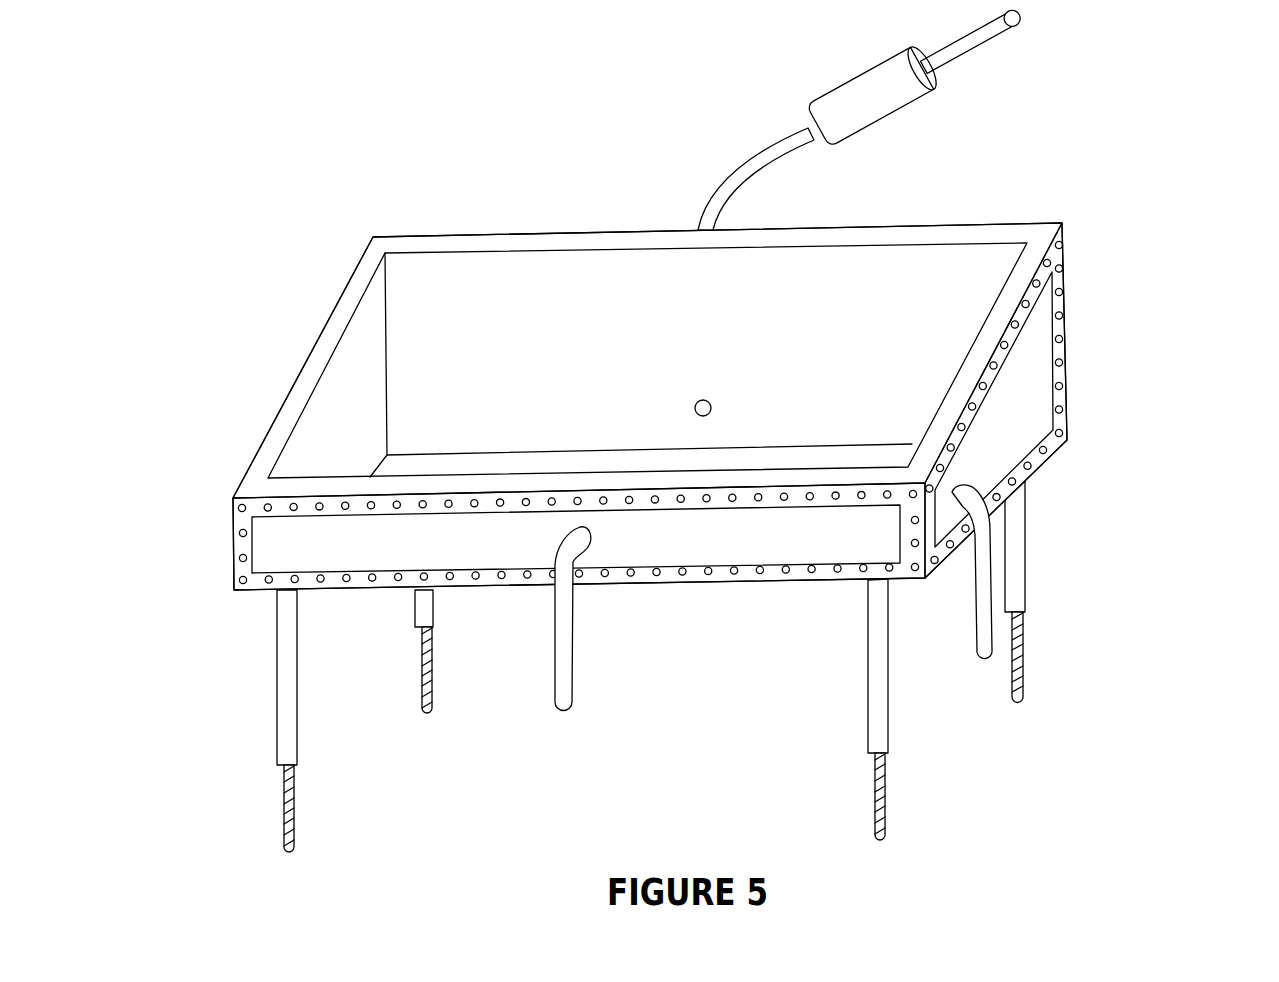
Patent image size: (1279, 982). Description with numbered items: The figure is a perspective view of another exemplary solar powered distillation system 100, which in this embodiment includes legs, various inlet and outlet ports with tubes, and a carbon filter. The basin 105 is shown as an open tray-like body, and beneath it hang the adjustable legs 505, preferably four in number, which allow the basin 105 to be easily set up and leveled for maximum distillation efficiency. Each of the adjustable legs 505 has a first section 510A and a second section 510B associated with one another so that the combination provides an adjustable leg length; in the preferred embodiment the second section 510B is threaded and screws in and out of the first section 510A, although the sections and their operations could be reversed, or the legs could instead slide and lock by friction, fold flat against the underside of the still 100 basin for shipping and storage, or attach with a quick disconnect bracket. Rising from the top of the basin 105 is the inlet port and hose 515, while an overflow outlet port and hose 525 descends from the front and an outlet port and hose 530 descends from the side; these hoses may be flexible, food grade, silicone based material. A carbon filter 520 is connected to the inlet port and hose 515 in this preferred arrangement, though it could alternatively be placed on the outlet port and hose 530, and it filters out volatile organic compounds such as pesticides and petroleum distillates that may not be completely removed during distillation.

The solar powered distillation system 100 is at (227, 317).
The basin 105 is at (875, 290).
The adjustable legs 505 is at (257, 595).
The first section 510A is at (287, 652).
The second section 510B is at (293, 793).
The inlet port and hose 515 is at (733, 182).
The carbon filter 520 is at (862, 107).
The overflow outlet port and hose 525 is at (563, 688).
The outlet port and hose 530 is at (990, 643).